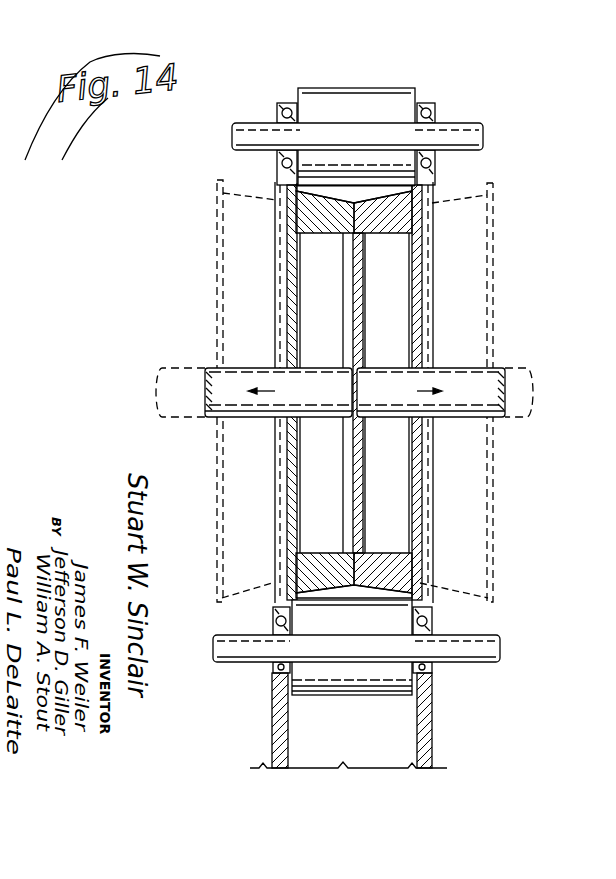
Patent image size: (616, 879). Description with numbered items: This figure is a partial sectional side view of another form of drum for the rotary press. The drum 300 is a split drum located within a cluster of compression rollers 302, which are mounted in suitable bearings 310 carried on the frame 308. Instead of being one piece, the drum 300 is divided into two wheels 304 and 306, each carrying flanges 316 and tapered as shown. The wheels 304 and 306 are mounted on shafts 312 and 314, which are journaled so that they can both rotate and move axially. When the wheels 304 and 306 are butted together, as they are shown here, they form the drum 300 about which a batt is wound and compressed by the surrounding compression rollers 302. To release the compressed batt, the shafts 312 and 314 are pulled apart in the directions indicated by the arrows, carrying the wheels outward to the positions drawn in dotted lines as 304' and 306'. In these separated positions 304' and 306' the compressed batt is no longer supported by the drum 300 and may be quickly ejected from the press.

The drum 300 is at (281, 190).
The compression rollers 302 is at (364, 88).
The wheel 304 is at (320, 392).
The outward position of wheel 304' is at (212, 391).
The wheel 306 is at (388, 392).
The outward position of wheel 306' is at (495, 392).
The frame 308 is at (273, 734).
The bearings 310 is at (437, 122).
The shaft 312 is at (205, 368).
The shaft 314 is at (503, 368).
The flanges 316 is at (426, 184).